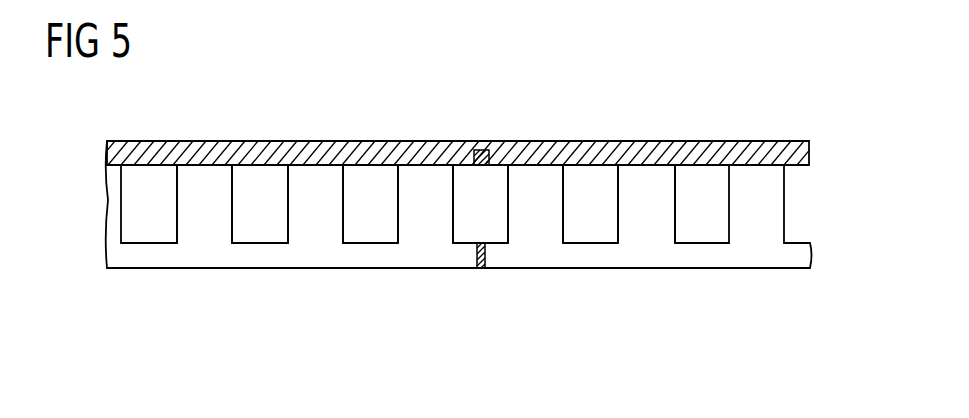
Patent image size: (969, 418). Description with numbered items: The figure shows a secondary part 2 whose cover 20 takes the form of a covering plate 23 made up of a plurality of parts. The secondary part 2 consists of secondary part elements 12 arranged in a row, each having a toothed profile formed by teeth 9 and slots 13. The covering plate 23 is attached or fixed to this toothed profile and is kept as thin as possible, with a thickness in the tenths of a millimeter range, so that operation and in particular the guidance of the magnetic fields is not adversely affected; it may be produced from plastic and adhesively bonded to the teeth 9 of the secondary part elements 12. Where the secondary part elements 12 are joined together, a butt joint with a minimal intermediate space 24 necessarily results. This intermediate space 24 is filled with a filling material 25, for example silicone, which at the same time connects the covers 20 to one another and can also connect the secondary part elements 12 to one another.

The secondary part 2 is at (805, 92).
The teeth 9 is at (533, 232).
The secondary part element 12 is at (148, 268).
The slots 13 is at (250, 226).
The cover 20 is at (197, 140).
The covering plate 23 is at (289, 152).
The intermediate space 24 is at (480, 288).
The filling material 25 is at (487, 147).